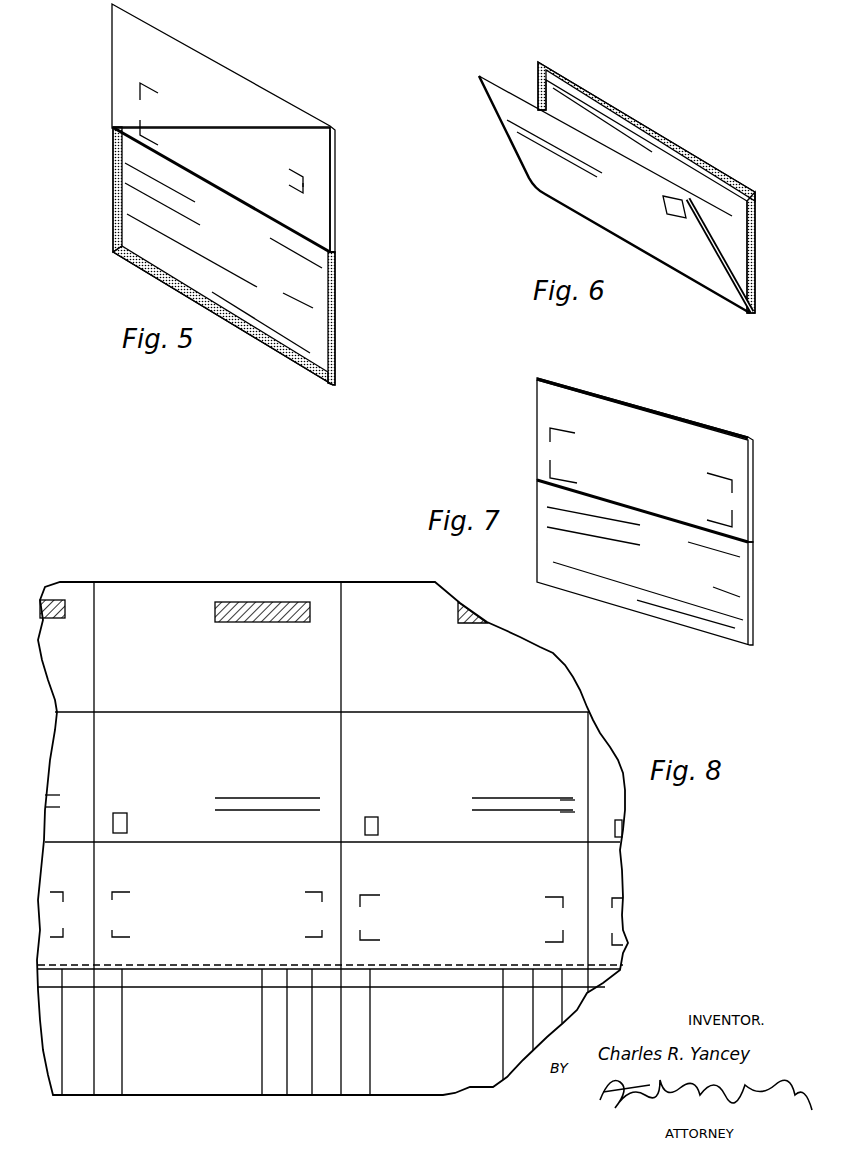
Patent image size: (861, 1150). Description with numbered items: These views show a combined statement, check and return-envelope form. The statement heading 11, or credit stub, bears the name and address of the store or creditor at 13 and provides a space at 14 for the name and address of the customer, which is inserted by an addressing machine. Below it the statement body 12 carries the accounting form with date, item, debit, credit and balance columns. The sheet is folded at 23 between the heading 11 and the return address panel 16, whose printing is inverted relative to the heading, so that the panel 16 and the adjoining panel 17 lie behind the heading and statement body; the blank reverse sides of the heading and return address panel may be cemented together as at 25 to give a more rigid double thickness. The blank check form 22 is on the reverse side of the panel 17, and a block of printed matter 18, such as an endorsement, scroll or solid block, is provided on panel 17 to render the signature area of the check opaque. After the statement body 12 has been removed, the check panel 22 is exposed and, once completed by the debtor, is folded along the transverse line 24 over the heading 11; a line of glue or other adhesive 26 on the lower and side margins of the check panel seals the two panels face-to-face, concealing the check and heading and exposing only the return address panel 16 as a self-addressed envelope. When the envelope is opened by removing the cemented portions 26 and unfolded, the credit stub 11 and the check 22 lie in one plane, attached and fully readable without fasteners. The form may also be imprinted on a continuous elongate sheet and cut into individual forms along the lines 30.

In FIG. 5, the statement heading 11 is at (313, 157).
In FIG. 7, the statement heading 11 is at (715, 442).
In FIG. 8, the statement heading 11 is at (572, 873).
In FIG. 8, the statement body 12 is at (202, 1070).
In FIG. 5, the name and address of the store or creditor 13 is at (190, 66).
In FIG. 7, the name and address of the store or creditor 13 is at (637, 418).
In FIG. 5, the space for insertion of the name and address of the customer 14 is at (158, 110).
In FIG. 7, the space for insertion of the name and address of the customer 14 is at (563, 447).
In FIG. 8, the space for insertion of the name and address of the customer 14 is at (548, 927).
In FIG. 6, the return address panel 16 is at (545, 173).
In FIG. 8, the return address panel 16 is at (572, 737).
In FIG. 8, the panel or section 17 is at (145, 598).
In FIG. 8, the block of printed matter 18 is at (73, 582).
In FIG. 5, the check panel 22 is at (312, 287).
In FIG. 6, the check panel 22 is at (727, 193).
In FIG. 7, the check panel 22 is at (735, 570).
In FIG. 5, the fold 23 is at (285, 106).
In FIG. 6, the fold 23 is at (483, 74).
In FIG. 5, the transverse line 24 is at (333, 256).
In FIG. 6, the transverse line 24 is at (705, 289).
In FIG. 7, the cementing 25 is at (750, 498).
In FIG. 5, the line of glue or other adhesive 26 is at (113, 222).
In FIG. 6, the line of glue or other adhesive 26 is at (690, 153).
In FIG. 8, the lines 30 is at (95, 668).